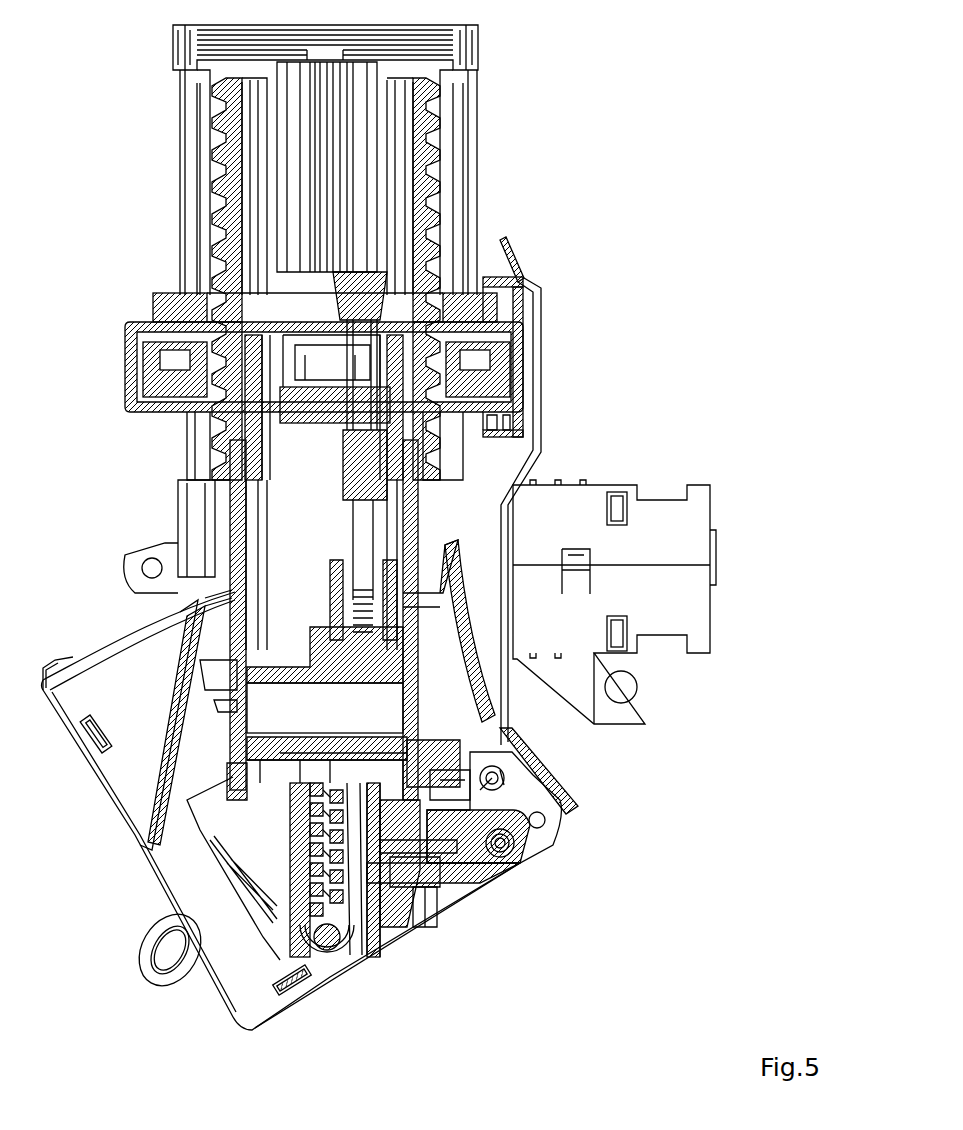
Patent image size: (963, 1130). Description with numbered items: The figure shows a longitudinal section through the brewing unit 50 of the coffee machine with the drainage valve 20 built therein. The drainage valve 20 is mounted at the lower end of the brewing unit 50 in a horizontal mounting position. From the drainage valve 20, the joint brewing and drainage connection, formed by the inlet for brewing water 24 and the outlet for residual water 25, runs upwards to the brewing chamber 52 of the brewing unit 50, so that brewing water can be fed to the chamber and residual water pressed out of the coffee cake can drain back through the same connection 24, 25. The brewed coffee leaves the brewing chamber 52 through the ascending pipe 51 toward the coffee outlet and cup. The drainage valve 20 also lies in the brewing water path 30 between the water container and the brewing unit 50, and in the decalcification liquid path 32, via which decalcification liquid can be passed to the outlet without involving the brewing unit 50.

The brewing unit 50 is at (592, 200).
The ascending pipe 51 is at (360, 432).
The brewing chamber 52 is at (327, 741).
The drainage valve 20 is at (523, 862).
The brewing water path 30 is at (507, 781).
The decalcification liquid path 32 is at (492, 778).
The inlet for brewing water 24 is at (458, 847).
The outlet for residual water 25 is at (500, 843).